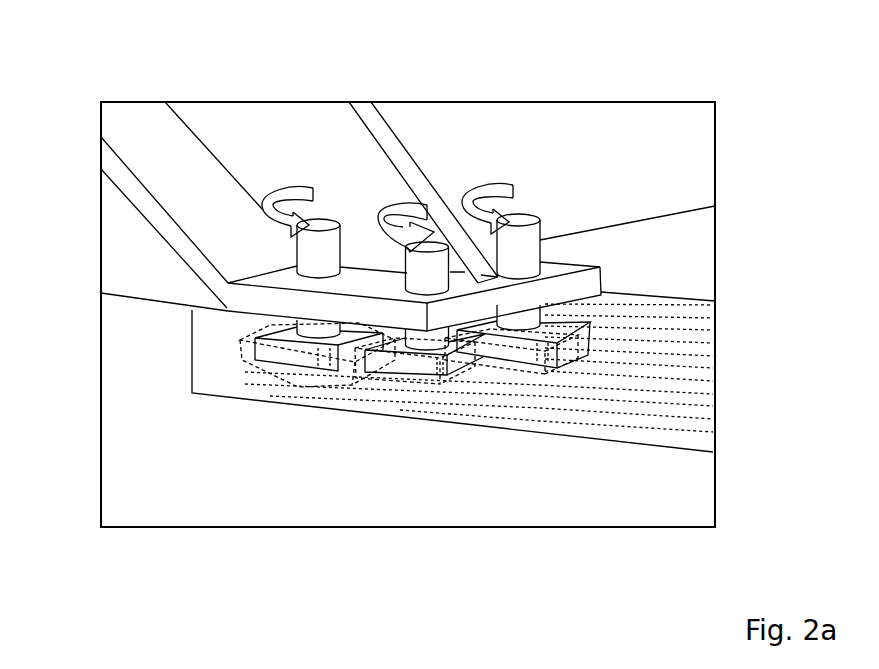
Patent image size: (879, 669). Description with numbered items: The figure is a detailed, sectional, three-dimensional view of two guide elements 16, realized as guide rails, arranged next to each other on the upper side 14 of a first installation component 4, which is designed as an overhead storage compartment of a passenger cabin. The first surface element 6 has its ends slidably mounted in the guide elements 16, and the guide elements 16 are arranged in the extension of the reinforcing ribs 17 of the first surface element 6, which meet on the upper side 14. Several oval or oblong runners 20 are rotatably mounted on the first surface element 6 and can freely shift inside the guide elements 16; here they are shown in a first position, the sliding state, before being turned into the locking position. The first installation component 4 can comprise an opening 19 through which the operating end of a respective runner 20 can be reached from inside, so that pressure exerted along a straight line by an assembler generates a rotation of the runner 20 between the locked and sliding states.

The first installation component 4 is at (134, 476).
The first surface element 6 is at (137, 150).
The reinforcing ribs 17 is at (300, 147).
The upper side 14 is at (685, 248).
The guide elements 16 is at (633, 340).
The opening 19 is at (311, 388).
The runners 20 is at (528, 357).